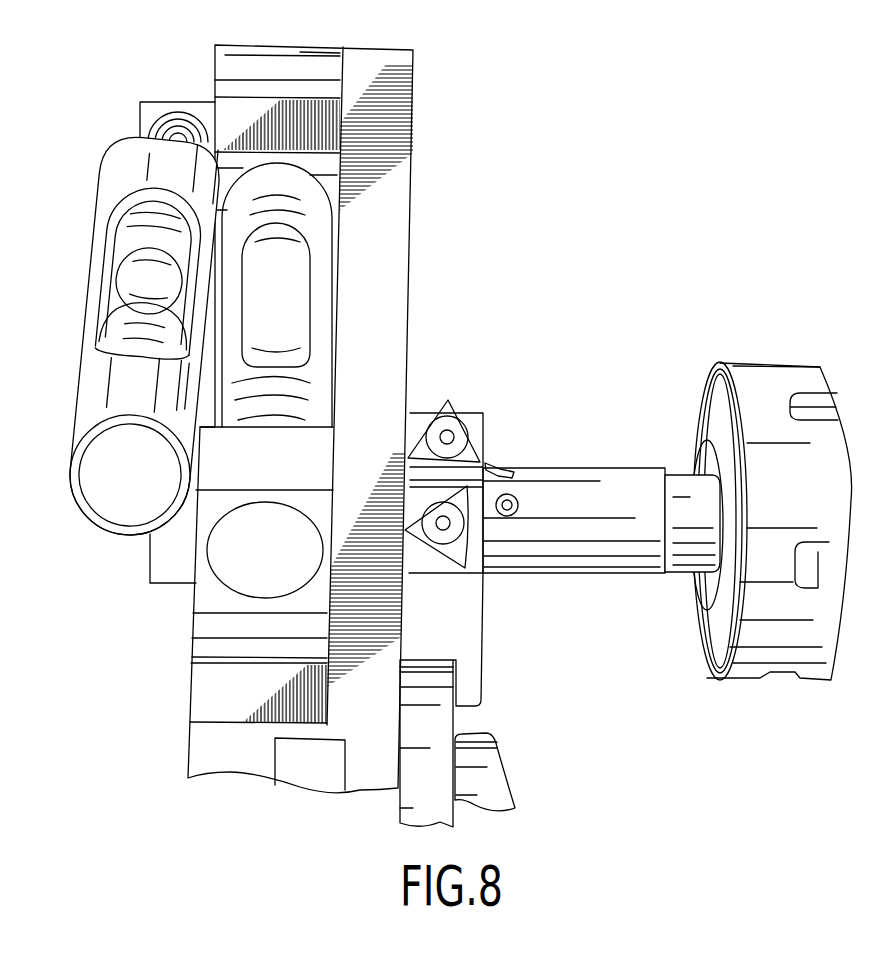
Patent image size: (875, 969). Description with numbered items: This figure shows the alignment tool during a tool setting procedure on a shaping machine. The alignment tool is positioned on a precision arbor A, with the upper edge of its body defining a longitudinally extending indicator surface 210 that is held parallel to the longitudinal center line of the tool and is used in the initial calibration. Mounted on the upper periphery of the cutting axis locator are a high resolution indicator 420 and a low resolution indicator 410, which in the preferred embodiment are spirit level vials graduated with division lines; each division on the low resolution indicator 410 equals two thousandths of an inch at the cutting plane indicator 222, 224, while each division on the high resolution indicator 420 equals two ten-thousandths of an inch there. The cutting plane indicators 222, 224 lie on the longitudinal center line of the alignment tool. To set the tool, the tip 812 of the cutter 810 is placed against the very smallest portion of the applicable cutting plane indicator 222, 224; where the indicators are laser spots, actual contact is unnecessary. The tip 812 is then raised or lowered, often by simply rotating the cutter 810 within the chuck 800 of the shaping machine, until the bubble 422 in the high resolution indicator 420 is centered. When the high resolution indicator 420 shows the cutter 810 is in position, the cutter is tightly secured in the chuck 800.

The indicator surface 210 is at (378, 233).
The cutting plane indicator 222 is at (468, 565).
The cutting plane indicator 224 is at (489, 462).
The low resolution indicator 410 is at (128, 278).
The high resolution indicator 420 is at (315, 388).
The bubble 422 is at (298, 306).
The chuck 800 is at (720, 398).
The cutter 810 is at (598, 550).
The tip of the cutter 812 is at (503, 468).
The precision arbor A is at (493, 777).